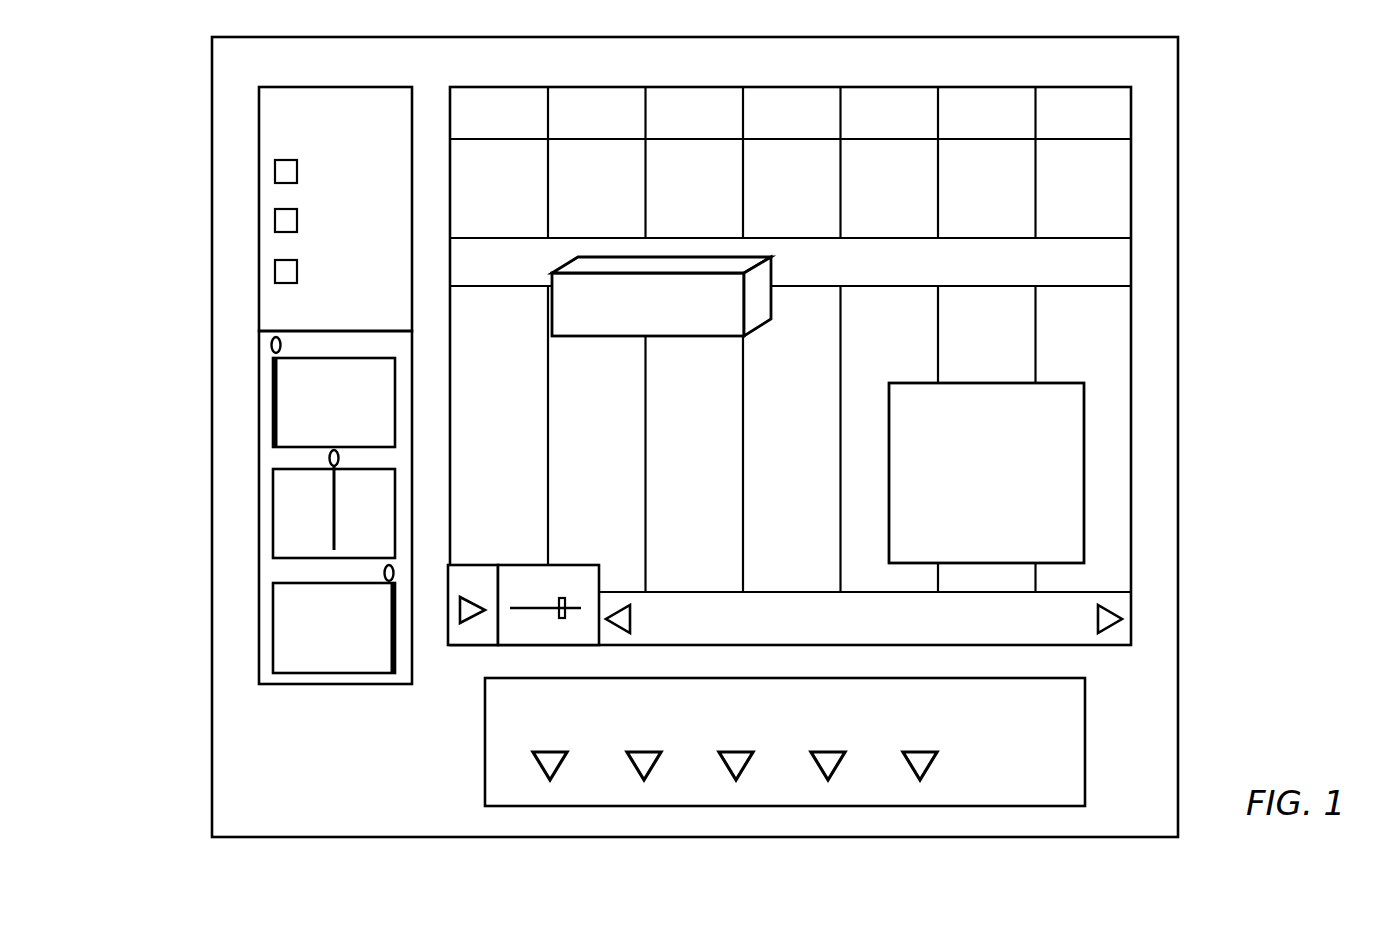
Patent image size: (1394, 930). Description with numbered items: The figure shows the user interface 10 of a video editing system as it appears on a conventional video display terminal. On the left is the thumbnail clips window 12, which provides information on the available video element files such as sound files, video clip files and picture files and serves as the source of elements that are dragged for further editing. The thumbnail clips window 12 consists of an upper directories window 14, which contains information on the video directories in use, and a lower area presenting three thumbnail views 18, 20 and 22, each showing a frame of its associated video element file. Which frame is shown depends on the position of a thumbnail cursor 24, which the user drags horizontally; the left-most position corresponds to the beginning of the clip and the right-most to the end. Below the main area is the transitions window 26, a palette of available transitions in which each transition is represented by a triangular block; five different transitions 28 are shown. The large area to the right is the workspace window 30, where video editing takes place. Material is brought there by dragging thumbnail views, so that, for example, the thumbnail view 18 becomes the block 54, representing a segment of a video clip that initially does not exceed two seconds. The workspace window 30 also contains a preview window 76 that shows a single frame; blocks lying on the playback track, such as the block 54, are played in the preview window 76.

The user interface 10 is at (1192, 192).
The thumbnail clips window 12 is at (326, 686).
The directories window 14 is at (302, 98).
The thumbnail view 18 is at (272, 408).
The thumbnail view 20 is at (272, 525).
The thumbnail view 22 is at (272, 650).
The thumbnail cursor 24 is at (270, 345).
The transitions window 26 is at (894, 802).
The transitions 28 is at (560, 766).
The workspace window 30 is at (1133, 498).
The block 54 is at (609, 338).
The preview window 76 is at (1084, 418).